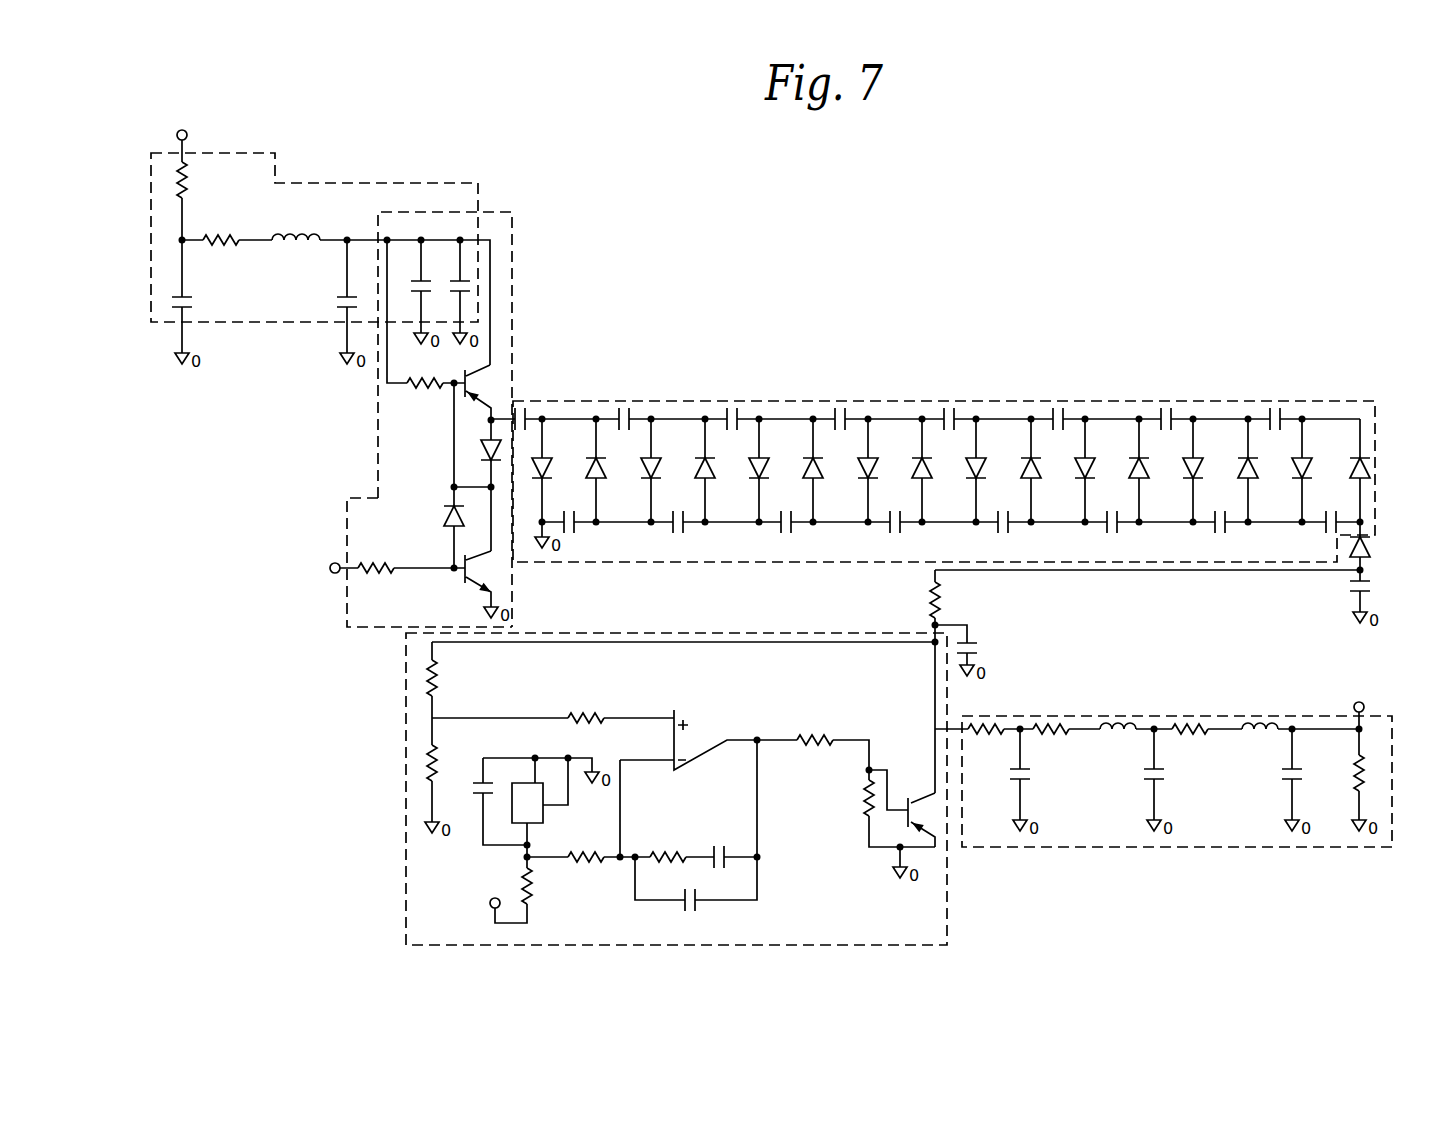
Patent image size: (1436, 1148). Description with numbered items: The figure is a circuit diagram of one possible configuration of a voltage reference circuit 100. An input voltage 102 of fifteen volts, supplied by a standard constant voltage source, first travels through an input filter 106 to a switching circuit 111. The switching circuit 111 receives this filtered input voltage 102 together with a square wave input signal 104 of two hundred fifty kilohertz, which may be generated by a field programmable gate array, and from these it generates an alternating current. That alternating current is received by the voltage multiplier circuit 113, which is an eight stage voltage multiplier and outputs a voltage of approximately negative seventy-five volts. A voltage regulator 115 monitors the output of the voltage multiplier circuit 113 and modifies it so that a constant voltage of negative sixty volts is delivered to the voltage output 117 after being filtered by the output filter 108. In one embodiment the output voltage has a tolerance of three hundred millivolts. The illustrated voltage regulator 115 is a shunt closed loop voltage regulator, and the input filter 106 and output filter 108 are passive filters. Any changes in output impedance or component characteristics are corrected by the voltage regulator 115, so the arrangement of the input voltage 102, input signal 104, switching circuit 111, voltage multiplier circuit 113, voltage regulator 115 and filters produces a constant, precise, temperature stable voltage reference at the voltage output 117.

The voltage reference circuit 100 is at (966, 270).
The input voltage 102 is at (187, 131).
The time varying input signal 104 is at (332, 564).
The input filter 106 is at (377, 184).
The output filter 108 is at (1091, 716).
The switching circuit 111 is at (513, 258).
The voltage multiplier circuit 113 is at (712, 401).
The voltage regulator 115 is at (406, 730).
The voltage output 117 is at (1363, 703).